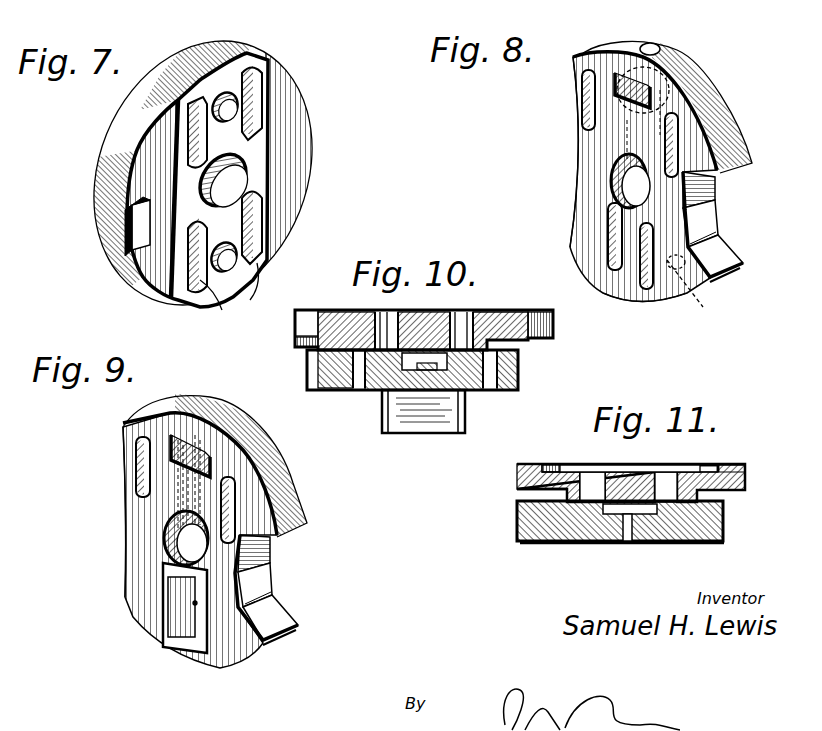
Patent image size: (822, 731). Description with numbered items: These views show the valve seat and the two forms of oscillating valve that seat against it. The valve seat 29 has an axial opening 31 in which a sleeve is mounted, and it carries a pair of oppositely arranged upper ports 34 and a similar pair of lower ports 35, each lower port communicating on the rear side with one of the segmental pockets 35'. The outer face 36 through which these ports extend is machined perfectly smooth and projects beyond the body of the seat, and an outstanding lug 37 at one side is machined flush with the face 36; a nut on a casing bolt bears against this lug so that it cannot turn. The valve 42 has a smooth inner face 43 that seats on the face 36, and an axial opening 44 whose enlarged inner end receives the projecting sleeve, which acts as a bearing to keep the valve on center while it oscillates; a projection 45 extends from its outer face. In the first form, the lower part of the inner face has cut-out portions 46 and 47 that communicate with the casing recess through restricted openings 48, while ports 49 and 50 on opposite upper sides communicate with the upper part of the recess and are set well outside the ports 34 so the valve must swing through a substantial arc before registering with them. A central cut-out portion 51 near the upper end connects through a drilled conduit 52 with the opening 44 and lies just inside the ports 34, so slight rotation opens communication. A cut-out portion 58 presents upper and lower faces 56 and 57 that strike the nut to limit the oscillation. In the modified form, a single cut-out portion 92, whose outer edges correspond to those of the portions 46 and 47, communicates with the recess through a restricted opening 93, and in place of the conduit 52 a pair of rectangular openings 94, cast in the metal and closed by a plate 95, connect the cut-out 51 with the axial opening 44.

In FIG. 7, the valve seat 29 is at (312, 137).
In FIG. 10, the valve seat 29 is at (503, 306).
In FIG. 11, the valve seat 29 is at (542, 456).
In FIG. 7, the axial opening 31 is at (228, 178).
In FIG. 7, the upper ports 34 is at (250, 95).
In FIG. 10, the upper ports 34 is at (387, 327).
In FIG. 7, the lower ports 35 is at (229, 293).
In FIG. 11, the lower ports 35 is at (628, 471).
In FIG. 11, the segmental pockets 35' is at (646, 442).
In FIG. 7, the outer face 36 is at (237, 62).
In FIG. 7, the outstanding lug 37 is at (140, 243).
In FIG. 8, the valve 42 is at (720, 84).
In FIG. 9, the valve 42 is at (295, 509).
In FIG. 10, the valve 42 is at (519, 365).
In FIG. 11, the valve 42 is at (530, 527).
In FIG. 8, the inner face 43 is at (593, 145).
In FIG. 9, the inner face 43 is at (135, 570).
In FIG. 11, the inner face 43 is at (527, 497).
In FIG. 8, the axial opening 44 is at (628, 175).
In FIG. 9, the axial opening 44 is at (188, 540).
In FIG. 10, the projection 45 is at (480, 440).
In FIG. 8, the cut-out portion 46 is at (632, 297).
In FIG. 8, the cut-out portion 47 is at (611, 254).
In FIG. 8, the restricted openings 48 is at (697, 288).
In FIG. 8, the port 49 is at (678, 125).
In FIG. 9, the port 49 is at (237, 492).
In FIG. 10, the port 49 is at (360, 380).
In FIG. 8, the port 50 is at (581, 100).
In FIG. 9, the port 50 is at (140, 462).
In FIG. 10, the port 50 is at (487, 393).
In FIG. 8, the cut-out portion 51 is at (617, 75).
In FIG. 9, the cut-out portion 51 is at (180, 433).
In FIG. 8, the drilled conduit 52 is at (631, 100).
In FIG. 8, the upper face 56 is at (717, 180).
In FIG. 9, the upper face 56 is at (270, 545).
In FIG. 8, the lower face 57 is at (730, 265).
In FIG. 9, the lower face 57 is at (275, 617).
In FIG. 8, the cut-out portion 58 is at (705, 212).
In FIG. 9, the cut-out portion 58 is at (272, 575).
In FIG. 9, the cut-out portion 92 is at (178, 645).
In FIG. 11, the cut-out portion 92 is at (617, 510).
In FIG. 9, the restricted opening 93 is at (195, 603).
In FIG. 11, the restricted opening 93 is at (630, 540).
In FIG. 9, the rectangular openings 94 is at (215, 450).
In FIG. 10, the rectangular openings 94 is at (440, 372).
In FIG. 9, the plate 95 is at (177, 492).